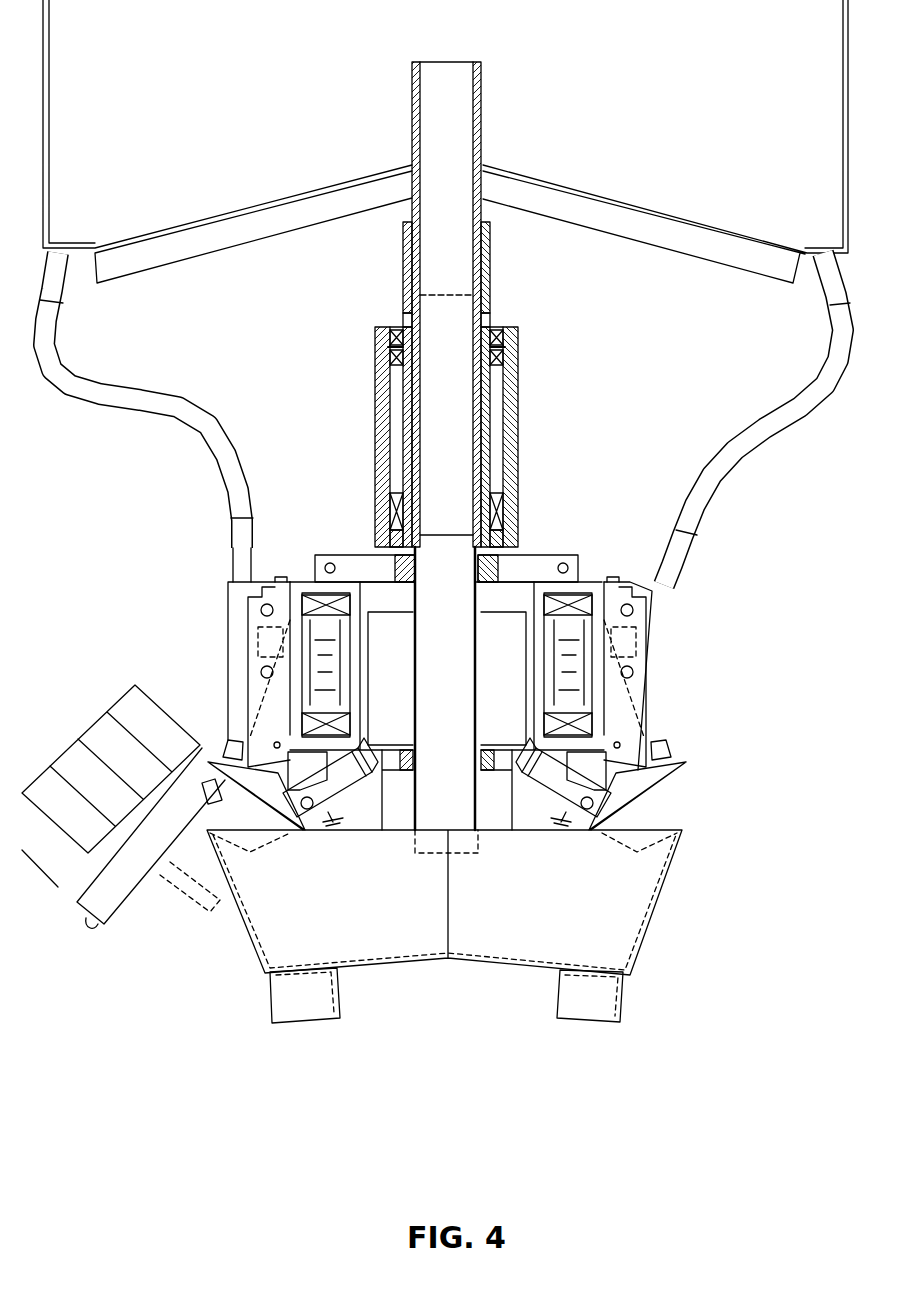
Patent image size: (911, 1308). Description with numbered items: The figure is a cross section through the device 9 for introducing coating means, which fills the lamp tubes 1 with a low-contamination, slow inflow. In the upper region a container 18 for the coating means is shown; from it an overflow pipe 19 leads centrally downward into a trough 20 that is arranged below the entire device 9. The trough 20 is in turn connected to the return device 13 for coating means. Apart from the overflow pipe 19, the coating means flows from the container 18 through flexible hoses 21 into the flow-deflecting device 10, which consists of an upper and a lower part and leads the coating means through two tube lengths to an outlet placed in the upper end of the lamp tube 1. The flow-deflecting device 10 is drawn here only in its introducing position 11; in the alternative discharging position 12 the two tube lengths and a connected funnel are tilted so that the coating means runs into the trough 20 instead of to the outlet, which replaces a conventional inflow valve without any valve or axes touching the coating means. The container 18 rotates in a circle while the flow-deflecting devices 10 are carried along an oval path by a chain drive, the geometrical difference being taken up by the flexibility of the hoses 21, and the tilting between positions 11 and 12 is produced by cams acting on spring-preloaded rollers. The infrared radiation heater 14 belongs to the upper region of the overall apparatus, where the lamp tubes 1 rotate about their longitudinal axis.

The lamp tube 1 is at (115, 905).
The device for introducing coating means 9 is at (165, 1092).
The flow-deflecting device 10 is at (455, 668).
The introducing position 11 is at (242, 625).
The discharging position 12 is at (658, 628).
The return device for coating means 13 is at (313, 1022).
The infrared radiation heater 14 is at (105, 740).
The container 18 is at (195, 48).
The overflow pipe 19 is at (460, 115).
The trough 20 is at (640, 905).
The hoses 21 is at (178, 415).